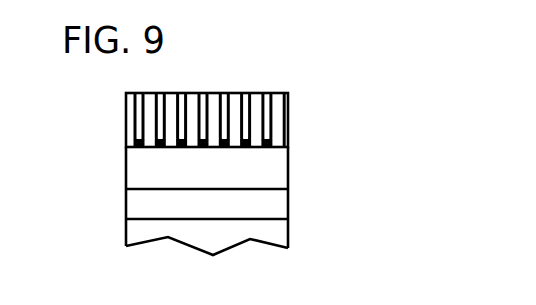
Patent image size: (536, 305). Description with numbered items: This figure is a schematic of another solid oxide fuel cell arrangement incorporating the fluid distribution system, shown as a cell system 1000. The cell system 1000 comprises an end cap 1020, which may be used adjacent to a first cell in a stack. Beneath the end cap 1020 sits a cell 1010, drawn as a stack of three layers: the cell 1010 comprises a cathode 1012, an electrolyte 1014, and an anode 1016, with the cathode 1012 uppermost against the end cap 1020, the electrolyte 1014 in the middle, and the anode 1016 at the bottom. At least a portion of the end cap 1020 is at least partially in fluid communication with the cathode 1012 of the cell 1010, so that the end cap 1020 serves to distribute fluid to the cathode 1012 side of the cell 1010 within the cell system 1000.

The cell system 1000 is at (231, 84).
The cell 1010 is at (308, 149).
The cathode 1012 is at (126, 166).
The electrolyte 1014 is at (126, 200).
The anode 1016 is at (126, 232).
The end cap 1020 is at (288, 120).